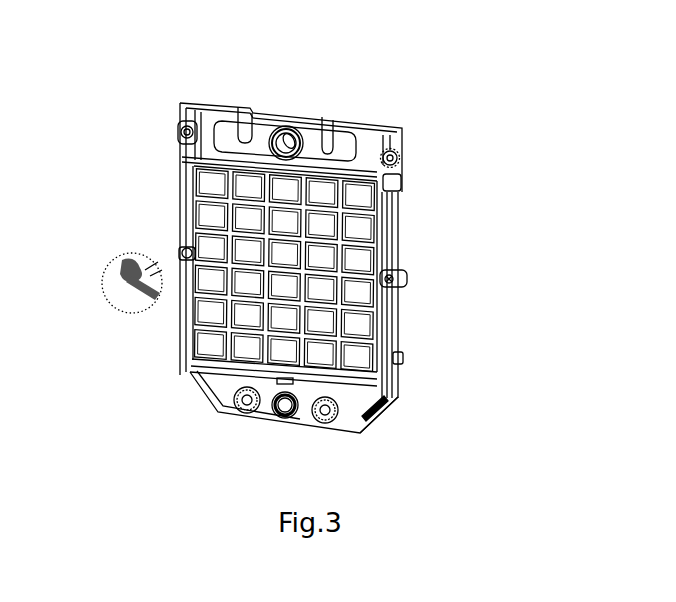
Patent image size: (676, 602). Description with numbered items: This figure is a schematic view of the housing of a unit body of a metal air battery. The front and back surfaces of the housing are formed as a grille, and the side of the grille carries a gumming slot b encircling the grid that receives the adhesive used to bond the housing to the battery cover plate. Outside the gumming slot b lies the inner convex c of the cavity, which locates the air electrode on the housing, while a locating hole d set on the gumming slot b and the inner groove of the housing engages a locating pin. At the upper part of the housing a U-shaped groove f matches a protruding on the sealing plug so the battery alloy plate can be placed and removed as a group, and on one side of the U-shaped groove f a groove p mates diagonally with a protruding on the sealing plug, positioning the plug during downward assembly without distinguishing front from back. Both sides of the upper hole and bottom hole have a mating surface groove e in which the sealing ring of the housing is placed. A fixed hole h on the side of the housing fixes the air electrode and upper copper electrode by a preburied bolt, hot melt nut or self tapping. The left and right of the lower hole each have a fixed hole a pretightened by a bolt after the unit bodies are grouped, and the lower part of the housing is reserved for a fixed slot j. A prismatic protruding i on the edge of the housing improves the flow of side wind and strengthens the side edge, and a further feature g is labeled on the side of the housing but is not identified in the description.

The fixed hole a is at (217, 410).
The gumming slot b is at (183, 293).
The inner convex of a cavity c is at (190, 205).
The locating hole d is at (178, 137).
The mating surface groove e is at (289, 115).
The U-shaped groove f is at (332, 120).
The ratchet boss g is at (400, 152).
The fixed hole h is at (405, 182).
The prismatic protruding i is at (398, 327).
The fixed slot j is at (398, 397).
The groove p is at (238, 105).